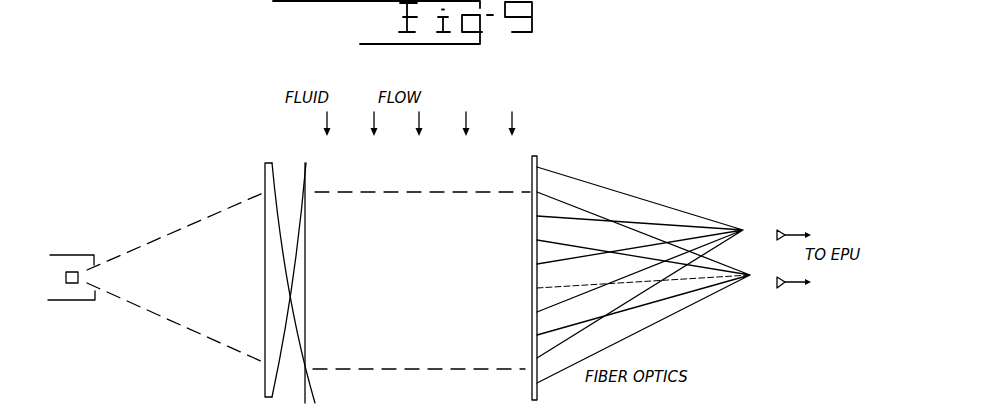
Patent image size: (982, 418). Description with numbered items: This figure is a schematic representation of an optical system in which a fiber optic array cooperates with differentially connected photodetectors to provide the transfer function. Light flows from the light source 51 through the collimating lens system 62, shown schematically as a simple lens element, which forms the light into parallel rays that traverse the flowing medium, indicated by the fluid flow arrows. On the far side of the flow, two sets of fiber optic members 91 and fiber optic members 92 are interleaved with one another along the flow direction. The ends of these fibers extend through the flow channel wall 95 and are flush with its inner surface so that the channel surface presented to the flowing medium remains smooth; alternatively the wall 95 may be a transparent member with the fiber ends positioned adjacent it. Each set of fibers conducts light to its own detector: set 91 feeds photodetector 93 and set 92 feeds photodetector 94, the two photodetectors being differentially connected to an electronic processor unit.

The light source 51 is at (66, 278).
The collimating lens system 62 is at (299, 167).
The flow channel wall 95 is at (538, 157).
The fiber optic members 92 is at (713, 219).
The fiber optic members 91 is at (726, 294).
The photodetector 94 is at (781, 229).
The photodetector 93 is at (790, 284).